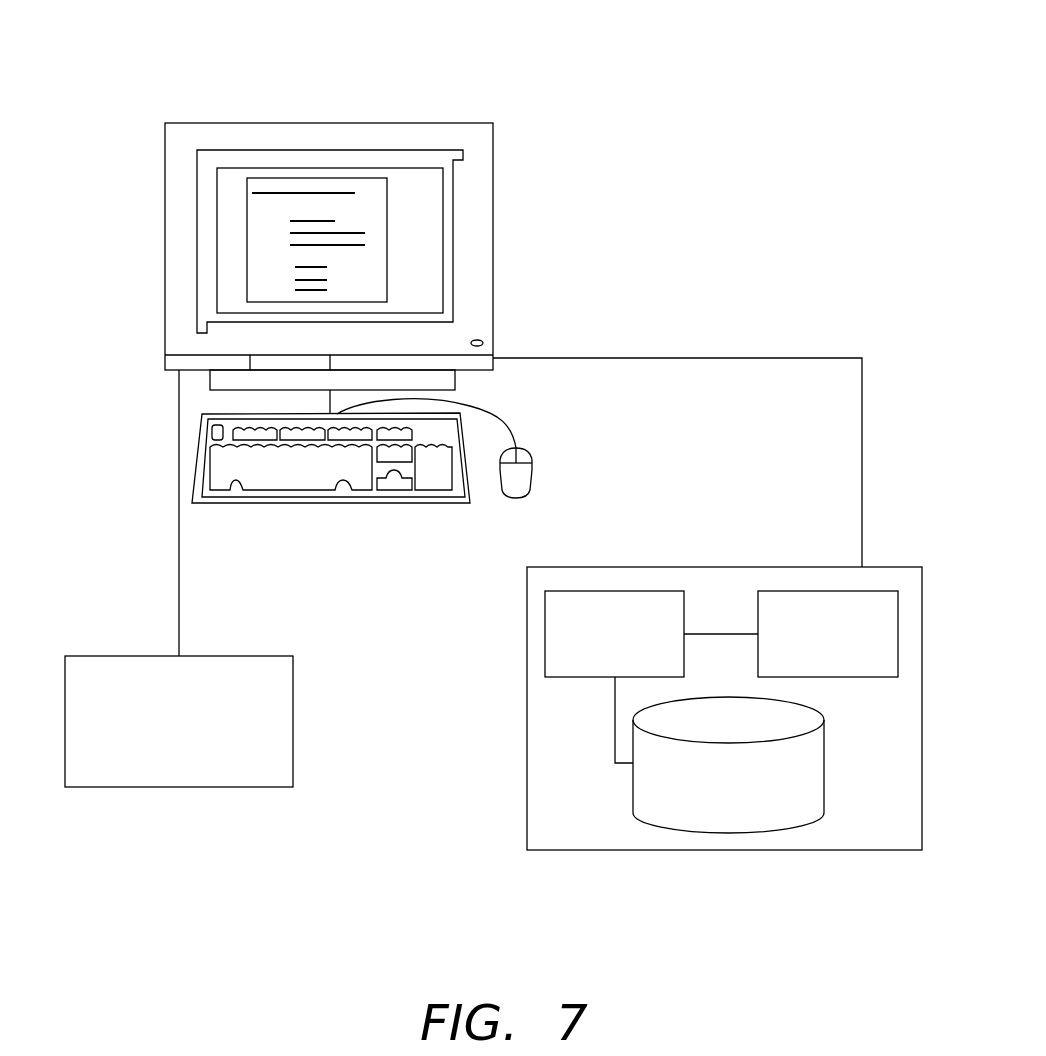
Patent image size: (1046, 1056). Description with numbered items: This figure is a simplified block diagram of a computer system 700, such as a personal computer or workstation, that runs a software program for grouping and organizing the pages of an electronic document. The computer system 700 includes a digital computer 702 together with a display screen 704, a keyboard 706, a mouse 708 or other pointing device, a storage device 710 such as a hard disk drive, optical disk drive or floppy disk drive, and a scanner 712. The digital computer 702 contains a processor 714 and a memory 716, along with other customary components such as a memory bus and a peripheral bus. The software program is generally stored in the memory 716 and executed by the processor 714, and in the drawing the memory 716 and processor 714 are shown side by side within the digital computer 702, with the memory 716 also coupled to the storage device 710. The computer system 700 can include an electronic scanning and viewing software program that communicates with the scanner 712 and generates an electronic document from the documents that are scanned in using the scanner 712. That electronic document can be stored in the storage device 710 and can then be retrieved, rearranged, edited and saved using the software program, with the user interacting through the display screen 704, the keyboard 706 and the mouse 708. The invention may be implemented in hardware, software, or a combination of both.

The computer system 700 is at (543, 102).
The digital computer 702 is at (480, 238).
The display screen 704 is at (370, 270).
The keyboard 706 is at (303, 503).
The mouse 708 is at (523, 455).
The storage device 710 is at (780, 727).
The scanner 712 is at (272, 722).
The processor 714 is at (758, 617).
The memory 716 is at (678, 650).